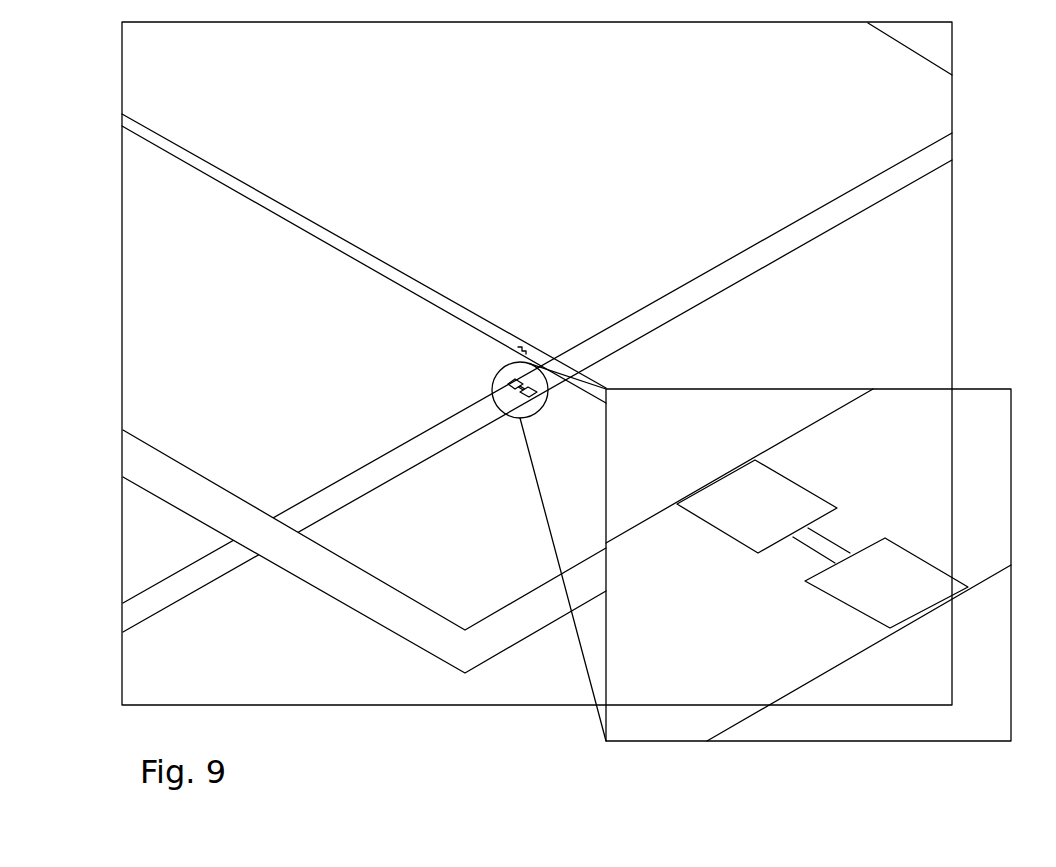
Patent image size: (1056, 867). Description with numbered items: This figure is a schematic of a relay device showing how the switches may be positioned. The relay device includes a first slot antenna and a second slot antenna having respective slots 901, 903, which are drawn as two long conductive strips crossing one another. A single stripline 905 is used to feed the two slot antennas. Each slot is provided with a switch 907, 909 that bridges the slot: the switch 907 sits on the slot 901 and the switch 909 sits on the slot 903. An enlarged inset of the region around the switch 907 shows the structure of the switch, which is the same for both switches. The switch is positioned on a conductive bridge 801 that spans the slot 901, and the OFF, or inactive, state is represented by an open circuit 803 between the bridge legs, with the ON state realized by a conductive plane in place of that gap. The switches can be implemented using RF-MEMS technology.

The slot of first slot antenna 901 is at (731, 260).
The slot of second slot antenna 903 is at (359, 248).
The stripline 905 is at (208, 482).
The switch 907 is at (496, 374).
The switch 909 is at (523, 350).
The conductive bridge 801 is at (789, 494).
The open circuit 803 is at (826, 546).